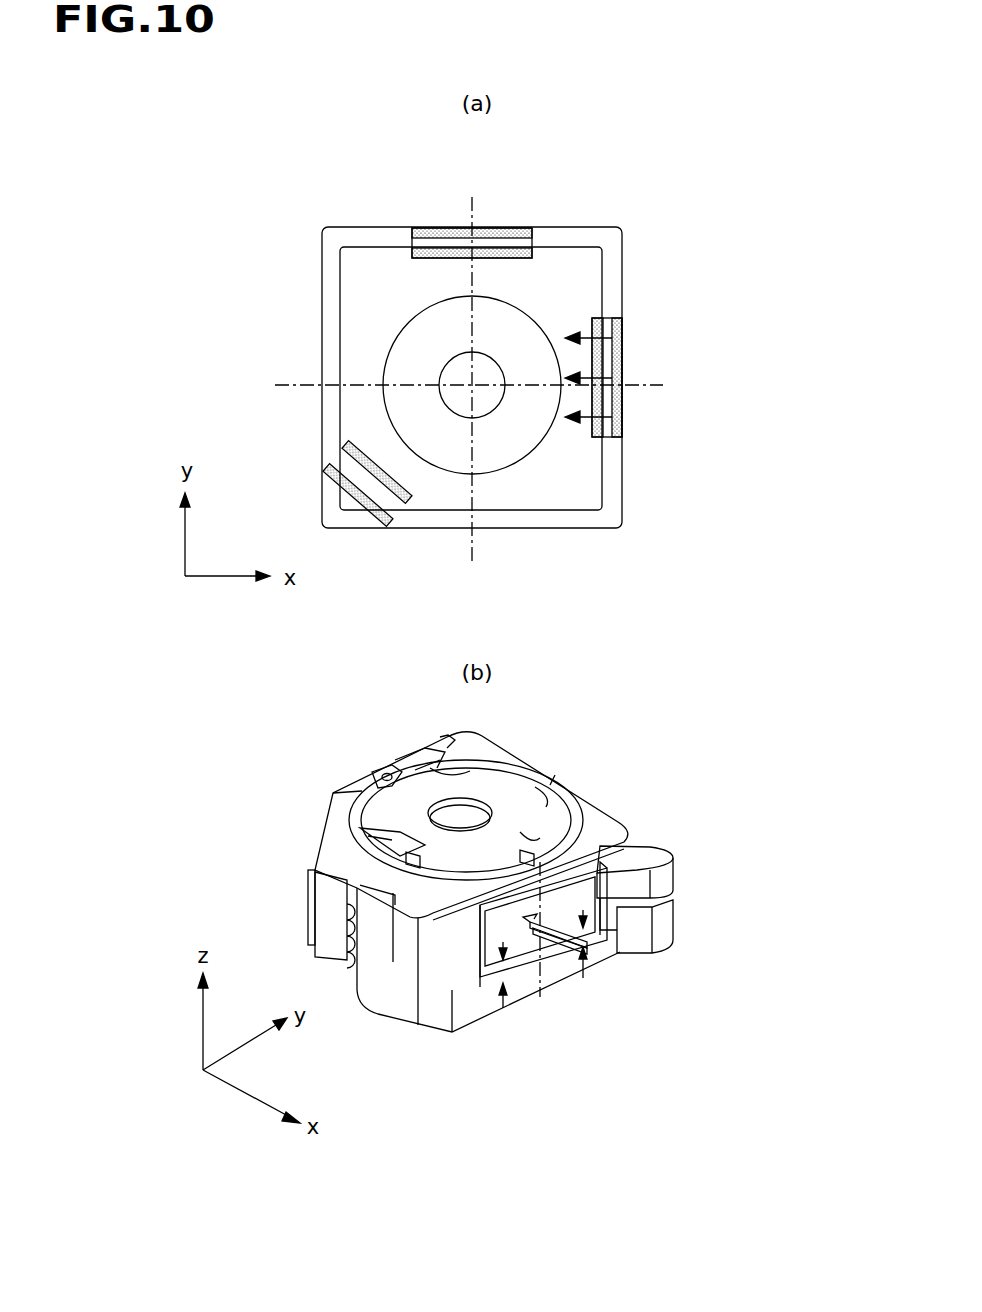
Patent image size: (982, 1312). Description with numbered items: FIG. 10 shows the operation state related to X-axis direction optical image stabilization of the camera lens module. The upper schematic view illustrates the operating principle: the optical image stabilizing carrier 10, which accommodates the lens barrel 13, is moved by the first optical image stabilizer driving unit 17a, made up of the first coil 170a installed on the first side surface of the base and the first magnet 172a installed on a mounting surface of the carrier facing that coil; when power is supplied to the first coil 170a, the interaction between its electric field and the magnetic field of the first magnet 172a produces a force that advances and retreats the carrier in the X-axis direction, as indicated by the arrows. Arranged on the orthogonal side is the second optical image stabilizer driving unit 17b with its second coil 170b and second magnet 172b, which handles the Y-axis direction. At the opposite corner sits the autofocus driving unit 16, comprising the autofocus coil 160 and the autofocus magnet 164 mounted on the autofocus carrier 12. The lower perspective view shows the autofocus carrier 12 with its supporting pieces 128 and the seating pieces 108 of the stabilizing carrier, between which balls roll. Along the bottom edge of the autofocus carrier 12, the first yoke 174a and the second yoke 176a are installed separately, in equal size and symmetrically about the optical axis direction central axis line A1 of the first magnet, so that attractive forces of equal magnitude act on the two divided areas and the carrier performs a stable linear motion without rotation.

The optical image stabilizing carrier 10 is at (360, 870).
The autofocus carrier 12 is at (393, 985).
The lens barrel 13 is at (507, 797).
The autofocus driving unit 16 is at (318, 605).
The autofocus coil 160 is at (353, 497).
The autofocus magnet 164 is at (380, 495).
The first optical image stabilizer driving unit 17a is at (762, 336).
The first coil 170a is at (617, 405).
The first magnet 172a is at (597, 358).
The second optical image stabilizer driving unit 17b is at (648, 162).
The second coil 170b is at (488, 229).
The second magnet 172b is at (510, 250).
The seating piece 108 is at (667, 878).
The supporting piece 128 is at (660, 928).
The first yoke 174a is at (513, 965).
The second yoke 176a is at (593, 938).
The optical axis direction central axis line A1 is at (543, 944).